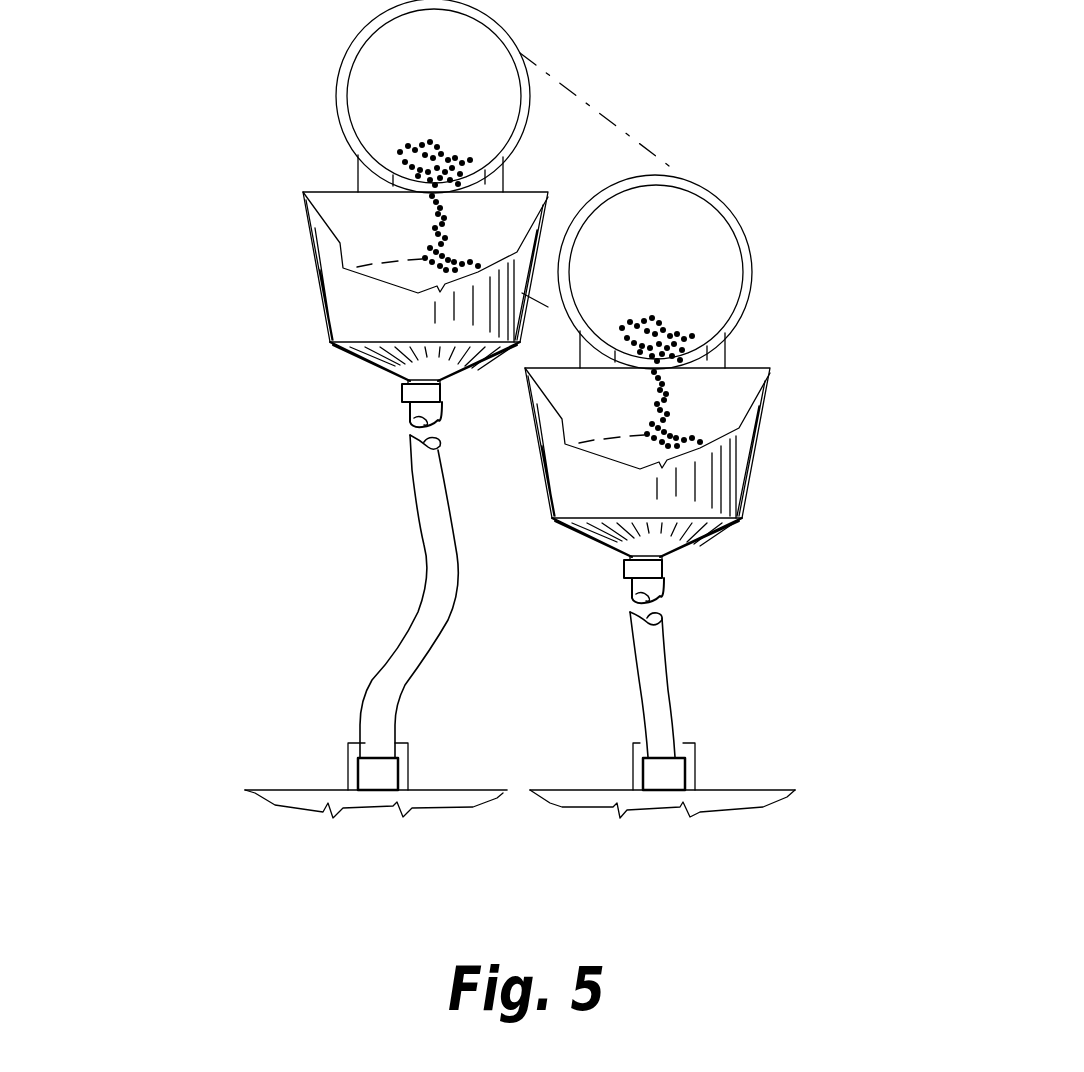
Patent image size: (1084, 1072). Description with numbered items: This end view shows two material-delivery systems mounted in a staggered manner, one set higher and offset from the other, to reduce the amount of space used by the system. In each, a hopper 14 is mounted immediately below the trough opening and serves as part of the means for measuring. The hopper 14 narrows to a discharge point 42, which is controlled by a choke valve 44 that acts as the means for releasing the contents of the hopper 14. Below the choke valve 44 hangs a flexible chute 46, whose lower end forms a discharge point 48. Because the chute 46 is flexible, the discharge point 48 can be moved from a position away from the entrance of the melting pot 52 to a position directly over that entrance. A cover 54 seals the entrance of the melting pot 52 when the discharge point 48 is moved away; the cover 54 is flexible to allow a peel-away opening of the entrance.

The hopper 14 is at (325, 310).
The discharge point 42 is at (402, 382).
The choke valve 44 is at (440, 394).
The flexible chute 46 is at (420, 543).
The discharge point 48 is at (400, 770).
The melting pot 52 is at (280, 808).
The cover 54 is at (348, 780).